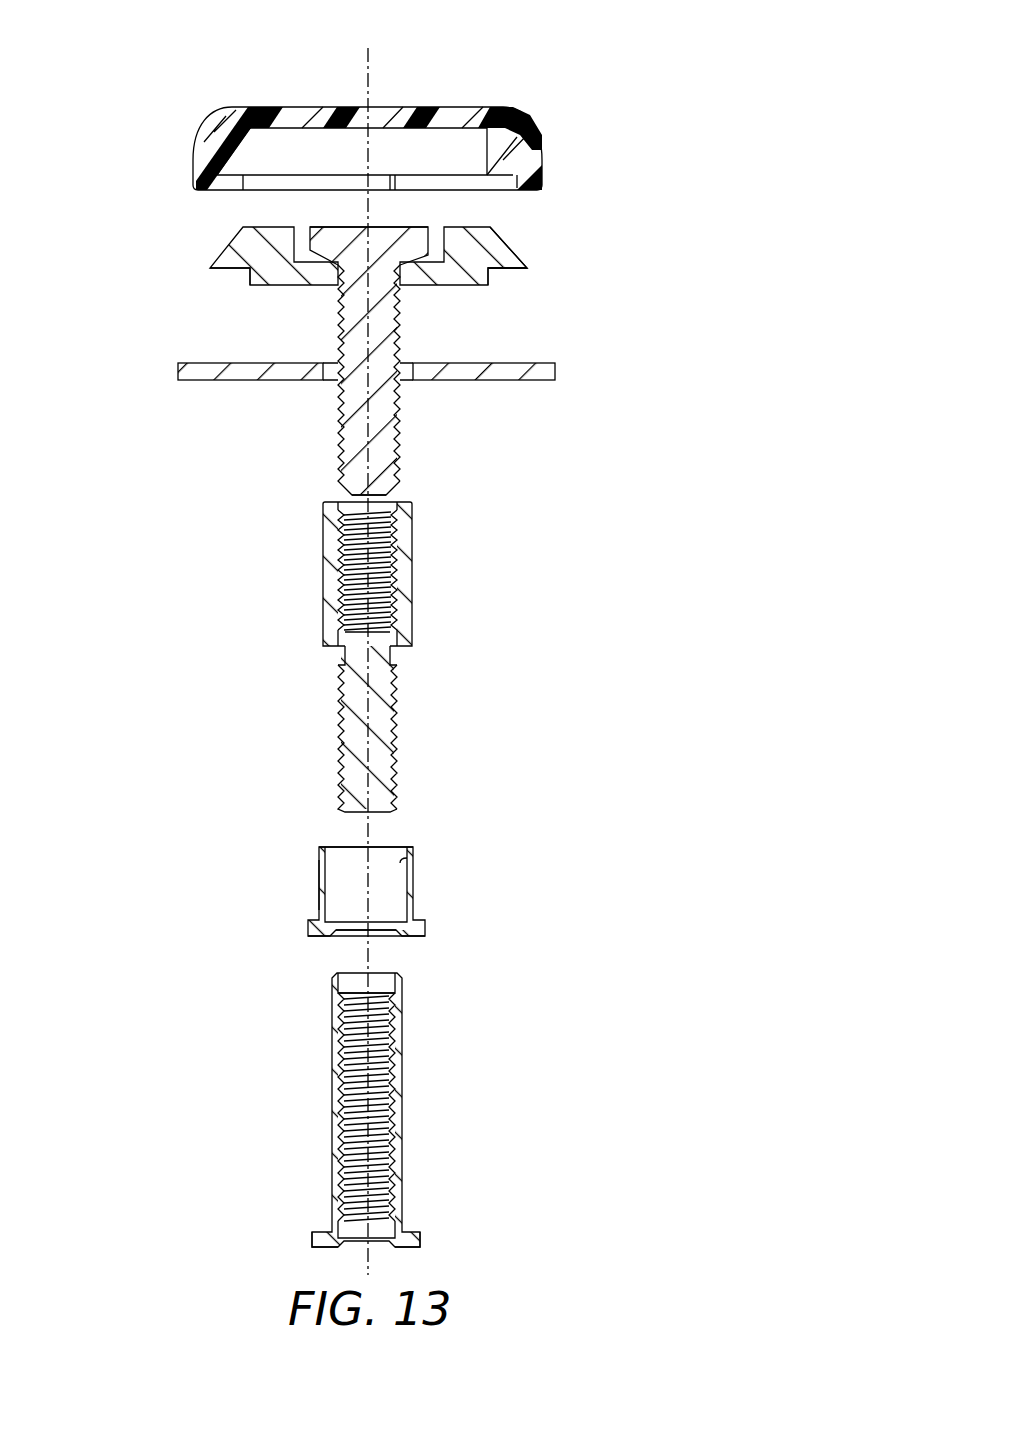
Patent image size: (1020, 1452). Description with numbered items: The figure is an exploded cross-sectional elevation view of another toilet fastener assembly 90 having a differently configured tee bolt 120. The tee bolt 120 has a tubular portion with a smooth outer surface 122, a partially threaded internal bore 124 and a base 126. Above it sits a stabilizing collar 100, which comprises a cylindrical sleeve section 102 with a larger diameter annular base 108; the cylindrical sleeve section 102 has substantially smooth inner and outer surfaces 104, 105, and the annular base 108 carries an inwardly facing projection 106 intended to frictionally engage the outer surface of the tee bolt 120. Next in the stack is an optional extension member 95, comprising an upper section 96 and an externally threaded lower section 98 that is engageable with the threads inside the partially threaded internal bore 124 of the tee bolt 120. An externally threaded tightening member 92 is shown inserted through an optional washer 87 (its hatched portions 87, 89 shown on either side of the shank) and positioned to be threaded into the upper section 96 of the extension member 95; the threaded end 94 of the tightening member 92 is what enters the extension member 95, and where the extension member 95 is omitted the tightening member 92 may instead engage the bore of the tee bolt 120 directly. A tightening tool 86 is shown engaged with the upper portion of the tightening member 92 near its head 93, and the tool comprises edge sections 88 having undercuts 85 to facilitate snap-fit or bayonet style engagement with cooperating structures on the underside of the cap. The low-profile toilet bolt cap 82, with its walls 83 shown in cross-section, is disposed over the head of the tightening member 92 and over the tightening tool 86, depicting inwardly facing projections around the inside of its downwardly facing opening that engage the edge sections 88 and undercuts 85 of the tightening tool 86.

The toilet fastener assembly 90 is at (497, 63).
The toilet bolt cap 82 is at (250, 112).
The cap side wall 83 is at (497, 150).
The bolt head top 93 is at (385, 226).
The tightening tool 86 is at (218, 240).
The undercut 85 is at (228, 270).
The edge section 88 is at (518, 270).
The tightening member 92 is at (330, 318).
The washer 87 is at (205, 373).
The washer portion 89 is at (405, 373).
The bolt threaded end 94 is at (390, 457).
The extension member 95 is at (308, 622).
The upper section 96 is at (407, 578).
The threaded stud 98 is at (342, 740).
The stabilizing collar 100 is at (436, 879).
The cylindrical sleeve section 102 is at (322, 847).
The inner surface 104 is at (322, 888).
The outer surface 105 is at (386, 858).
The inwardly facing projection 106 is at (352, 930).
The annular base 108 is at (423, 922).
The tee bolt 120 is at (415, 1084).
The smooth outer surface 122 is at (395, 1138).
The partially threaded internal bore 124 is at (353, 980).
The base 126 is at (317, 1232).